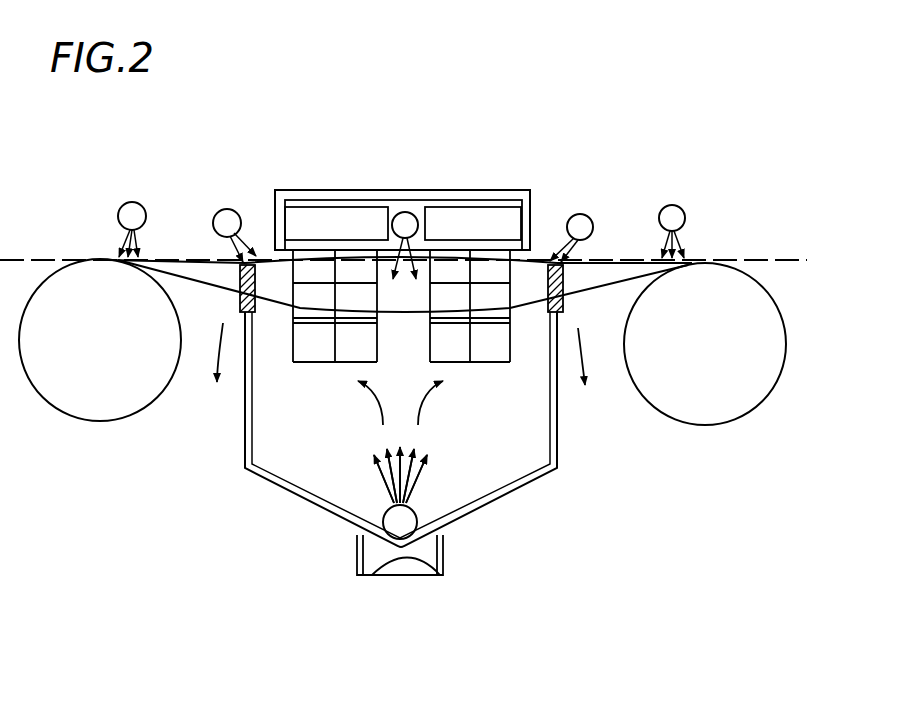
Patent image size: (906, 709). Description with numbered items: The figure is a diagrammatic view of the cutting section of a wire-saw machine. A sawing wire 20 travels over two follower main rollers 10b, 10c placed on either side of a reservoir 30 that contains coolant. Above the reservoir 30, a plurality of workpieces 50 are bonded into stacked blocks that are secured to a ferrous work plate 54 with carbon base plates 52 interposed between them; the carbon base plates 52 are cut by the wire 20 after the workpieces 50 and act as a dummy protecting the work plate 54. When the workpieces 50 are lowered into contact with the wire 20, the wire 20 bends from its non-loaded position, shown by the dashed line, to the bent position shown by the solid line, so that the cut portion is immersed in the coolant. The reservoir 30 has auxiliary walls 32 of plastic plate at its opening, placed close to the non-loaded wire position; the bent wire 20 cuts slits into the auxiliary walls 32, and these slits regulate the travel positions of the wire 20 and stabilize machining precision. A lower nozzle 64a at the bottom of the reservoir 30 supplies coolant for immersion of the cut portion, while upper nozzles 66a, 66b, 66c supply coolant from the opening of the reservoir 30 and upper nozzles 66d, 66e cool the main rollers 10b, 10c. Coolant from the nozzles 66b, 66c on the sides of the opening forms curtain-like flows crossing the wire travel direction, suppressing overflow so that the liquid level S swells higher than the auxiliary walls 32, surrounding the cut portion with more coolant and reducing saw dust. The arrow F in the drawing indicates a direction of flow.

The main roller 10b is at (76, 421).
The main roller 10c is at (710, 424).
The sawing wire 20 is at (606, 293).
The reservoir 30 is at (510, 495).
The auxiliary walls 32 is at (575, 277).
The workpieces 50 is at (498, 348).
The carbon base plates 52 is at (498, 215).
The work plate 54 is at (452, 190).
The lower nozzle 64a is at (407, 520).
The upper nozzle 66a is at (405, 212).
The upper nozzle 66b is at (227, 209).
The upper nozzle 66c is at (580, 214).
The upper nozzle 66d is at (134, 202).
The upper nozzle 66e is at (673, 205).
The liquid level S is at (388, 246).
The flow direction F is at (213, 348).